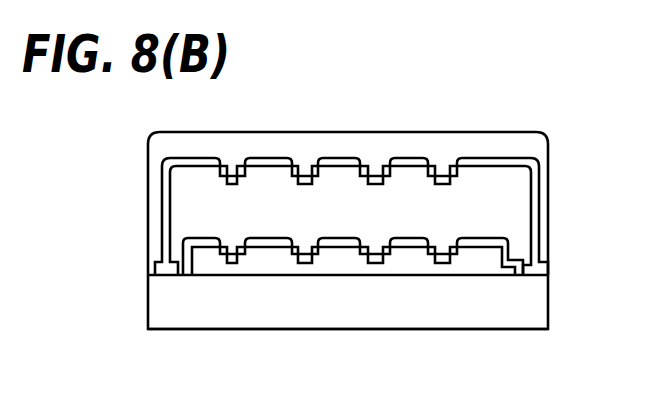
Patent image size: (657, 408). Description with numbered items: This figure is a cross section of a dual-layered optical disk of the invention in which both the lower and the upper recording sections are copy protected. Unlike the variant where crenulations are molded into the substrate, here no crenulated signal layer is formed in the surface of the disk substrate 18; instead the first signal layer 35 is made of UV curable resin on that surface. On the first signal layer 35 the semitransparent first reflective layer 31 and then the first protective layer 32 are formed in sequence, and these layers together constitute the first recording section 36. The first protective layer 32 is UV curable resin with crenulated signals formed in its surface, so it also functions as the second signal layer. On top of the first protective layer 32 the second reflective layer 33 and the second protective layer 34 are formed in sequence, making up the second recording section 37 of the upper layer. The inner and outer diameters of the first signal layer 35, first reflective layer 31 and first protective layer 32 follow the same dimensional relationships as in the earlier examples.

The disk substrate 18 is at (412, 313).
The first reflective layer 31 is at (480, 244).
The first protective layer 32 is at (517, 193).
The second reflective layer 33 is at (428, 165).
The second protective layer 34 is at (405, 150).
The first signal layer 35 is at (478, 267).
The first recording section 36 is at (138, 232).
The second recording section 37 is at (138, 132).